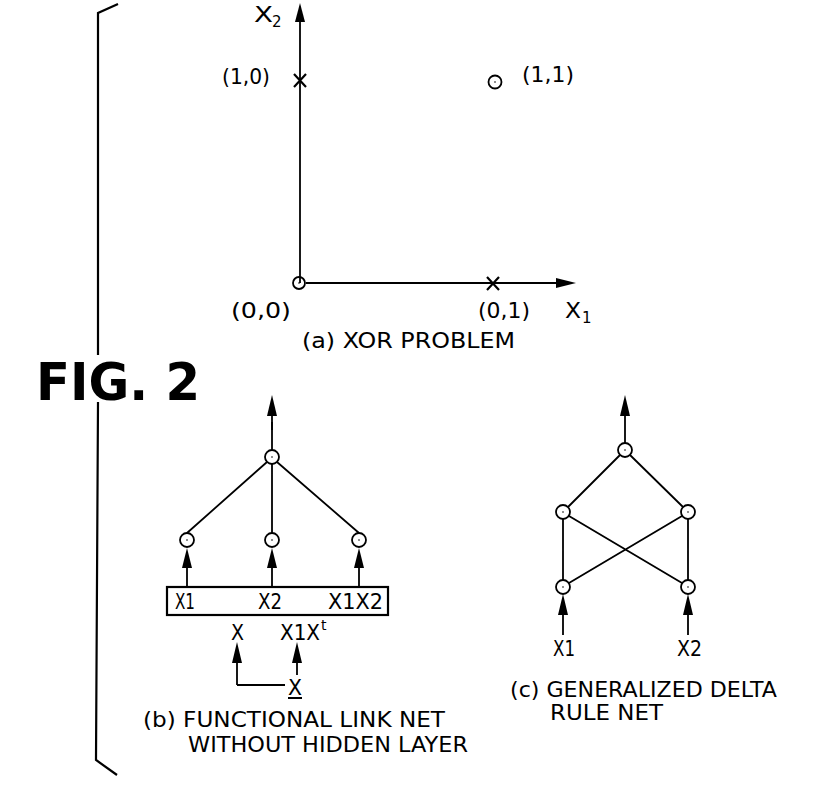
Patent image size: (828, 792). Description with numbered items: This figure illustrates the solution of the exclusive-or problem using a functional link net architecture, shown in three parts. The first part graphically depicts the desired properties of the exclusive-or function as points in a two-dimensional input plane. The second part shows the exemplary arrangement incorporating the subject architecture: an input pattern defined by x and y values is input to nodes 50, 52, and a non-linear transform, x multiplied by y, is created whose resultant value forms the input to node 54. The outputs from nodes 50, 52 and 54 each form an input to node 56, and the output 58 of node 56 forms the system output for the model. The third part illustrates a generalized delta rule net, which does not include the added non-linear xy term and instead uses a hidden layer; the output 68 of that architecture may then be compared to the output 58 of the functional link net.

The node 50 is at (182, 532).
The node 52 is at (265, 532).
The node 54 is at (367, 532).
The node 56 is at (278, 453).
The output 58 is at (273, 430).
The output 68 is at (623, 428).